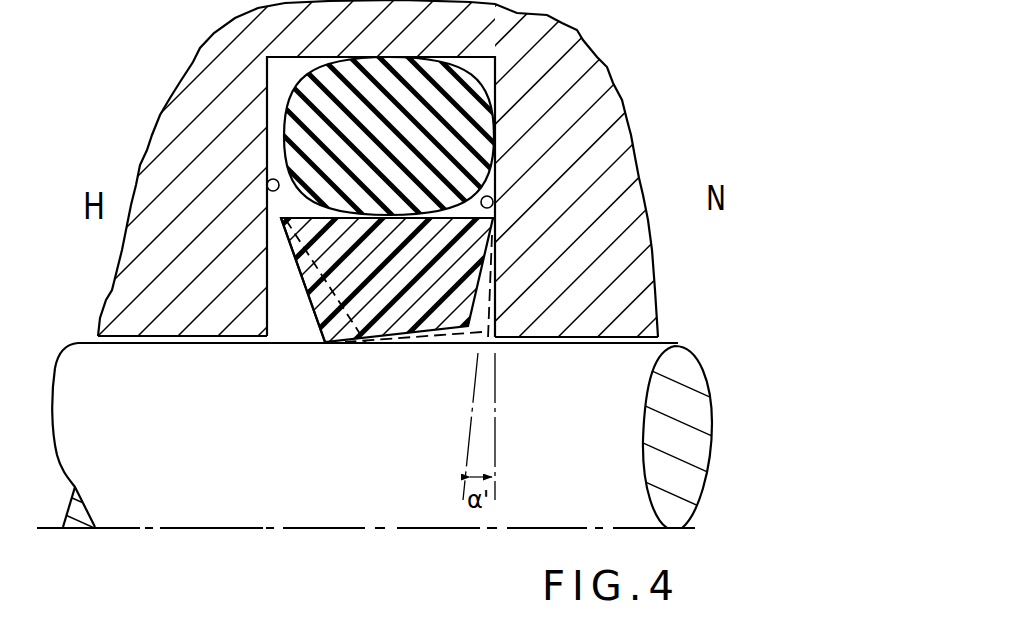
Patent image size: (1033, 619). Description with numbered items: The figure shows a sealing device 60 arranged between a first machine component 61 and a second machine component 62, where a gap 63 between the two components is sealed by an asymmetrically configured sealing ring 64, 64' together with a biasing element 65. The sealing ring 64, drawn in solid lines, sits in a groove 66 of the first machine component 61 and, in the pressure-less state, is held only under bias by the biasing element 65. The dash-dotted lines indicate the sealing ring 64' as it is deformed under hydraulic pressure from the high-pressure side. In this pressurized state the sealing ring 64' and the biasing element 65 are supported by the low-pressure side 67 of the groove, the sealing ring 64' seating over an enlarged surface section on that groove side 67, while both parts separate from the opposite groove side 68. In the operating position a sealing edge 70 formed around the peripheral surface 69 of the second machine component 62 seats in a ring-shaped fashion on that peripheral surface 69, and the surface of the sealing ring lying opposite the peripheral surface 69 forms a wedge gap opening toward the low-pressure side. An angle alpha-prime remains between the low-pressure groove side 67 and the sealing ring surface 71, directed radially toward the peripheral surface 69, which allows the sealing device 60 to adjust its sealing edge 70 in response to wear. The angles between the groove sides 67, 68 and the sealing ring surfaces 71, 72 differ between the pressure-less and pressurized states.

The sealing device 60 is at (752, 105).
The first machine component 61 is at (590, 146).
The second machine component 62 is at (236, 437).
The gap 63 is at (678, 342).
The sealing ring 64 is at (432, 275).
The sealing ring in pressurized state 64' is at (632, 286).
The biasing element 65 is at (458, 95).
The groove 66 is at (282, 71).
The low-pressure side of the groove 67 is at (500, 203).
The groove side 68 is at (268, 175).
The peripheral surface 69 is at (85, 340).
The sealing edge 70 is at (366, 343).
The sealing ring surface 71 is at (480, 329).
The sealing ring surface 72 is at (292, 262).